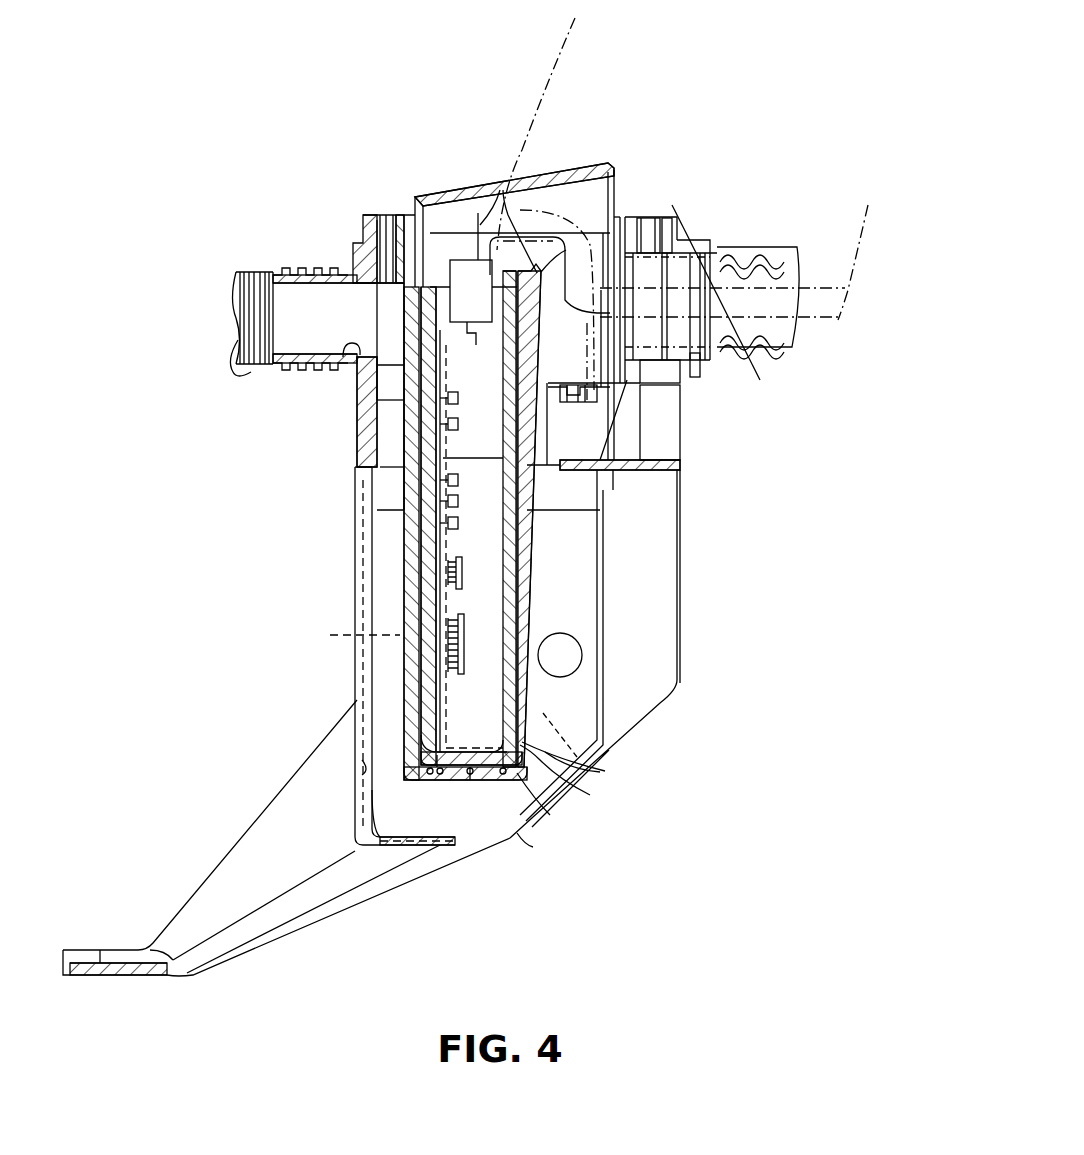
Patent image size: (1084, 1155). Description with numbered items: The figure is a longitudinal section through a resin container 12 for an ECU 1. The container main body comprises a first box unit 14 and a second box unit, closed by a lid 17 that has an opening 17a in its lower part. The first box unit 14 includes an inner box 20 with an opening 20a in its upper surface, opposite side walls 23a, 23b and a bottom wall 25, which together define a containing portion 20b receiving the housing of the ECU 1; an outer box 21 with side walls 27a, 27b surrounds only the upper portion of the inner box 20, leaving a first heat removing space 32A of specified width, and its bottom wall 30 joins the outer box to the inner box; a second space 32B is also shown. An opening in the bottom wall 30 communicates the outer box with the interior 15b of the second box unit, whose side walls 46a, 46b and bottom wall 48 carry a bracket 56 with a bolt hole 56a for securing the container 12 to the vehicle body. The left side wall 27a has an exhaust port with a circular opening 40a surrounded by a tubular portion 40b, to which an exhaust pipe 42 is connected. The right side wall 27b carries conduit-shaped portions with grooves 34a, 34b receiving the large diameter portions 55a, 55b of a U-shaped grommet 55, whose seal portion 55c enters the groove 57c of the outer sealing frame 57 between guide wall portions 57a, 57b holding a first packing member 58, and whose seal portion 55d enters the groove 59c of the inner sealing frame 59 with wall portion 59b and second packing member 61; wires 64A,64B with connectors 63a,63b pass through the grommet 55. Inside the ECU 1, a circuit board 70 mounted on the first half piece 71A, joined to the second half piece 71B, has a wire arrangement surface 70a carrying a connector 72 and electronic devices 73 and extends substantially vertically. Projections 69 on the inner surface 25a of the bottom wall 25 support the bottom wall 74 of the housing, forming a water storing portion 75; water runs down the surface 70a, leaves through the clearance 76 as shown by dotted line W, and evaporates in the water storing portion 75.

The ECU 1 is at (605, 771).
The container 12 is at (720, 102).
The first box unit 14 is at (375, 378).
The interior of the second box unit 15b is at (362, 765).
The lid 17 is at (421, 208).
The opening 17a is at (355, 280).
The inner box 20 is at (408, 560).
The opening 20a is at (522, 232).
The containing portion 20b is at (442, 696).
The outer box 21 is at (385, 425).
The side wall 23a is at (367, 215).
The side wall 23b is at (584, 178).
The bottom wall 25 is at (448, 782).
The inner surface 25a is at (460, 782).
The side wall 27a is at (385, 455).
The side wall 27b is at (680, 405).
The bottom wall 30 is at (570, 505).
The first heat removing space 32A is at (375, 395).
The partition wall 32B is at (437, 810).
The groove 34a is at (622, 410).
The groove 34b is at (680, 370).
The opening 40a is at (350, 348).
The tubular portion 40b is at (363, 303).
The exhaust pipe 42 is at (251, 372).
The side wall 46a is at (445, 648).
The side wall 46b is at (580, 700).
The bottom wall 48 is at (533, 847).
The grommet 55 is at (720, 250).
The large diameter portion 55a is at (680, 468).
The large diameter portion 55b is at (755, 340).
The seal portion 55c is at (750, 272).
The seal portion 55d is at (603, 285).
The bracket 56 is at (280, 898).
The bolt hole 56a is at (108, 975).
The outer sealing frame 57 is at (690, 250).
The guide wall portion 57a is at (680, 240).
The guide wall portion 57b is at (648, 222).
The groove 57c is at (668, 220).
The first packing member 58 is at (700, 240).
The inner sealing frame 59 is at (460, 260).
The wall portion 59b is at (478, 292).
The groove 59c is at (400, 215).
The second packing member 61 is at (383, 215).
The connectors 63a,63b is at (545, 60).
The wires 64A,64B is at (883, 249).
The projections 69 is at (483, 805).
The circuit board 70 is at (360, 780).
The wire arrangement surface 70a is at (408, 820).
The first half piece 71A is at (440, 530).
The second half piece 71B is at (585, 480).
The connector 72 is at (465, 305).
The electronic devices 73 is at (560, 660).
The bottom wall 74 is at (590, 795).
The water storing portion 75 is at (550, 815).
The clearance 76 is at (600, 772).
The dotted line W is at (350, 636).